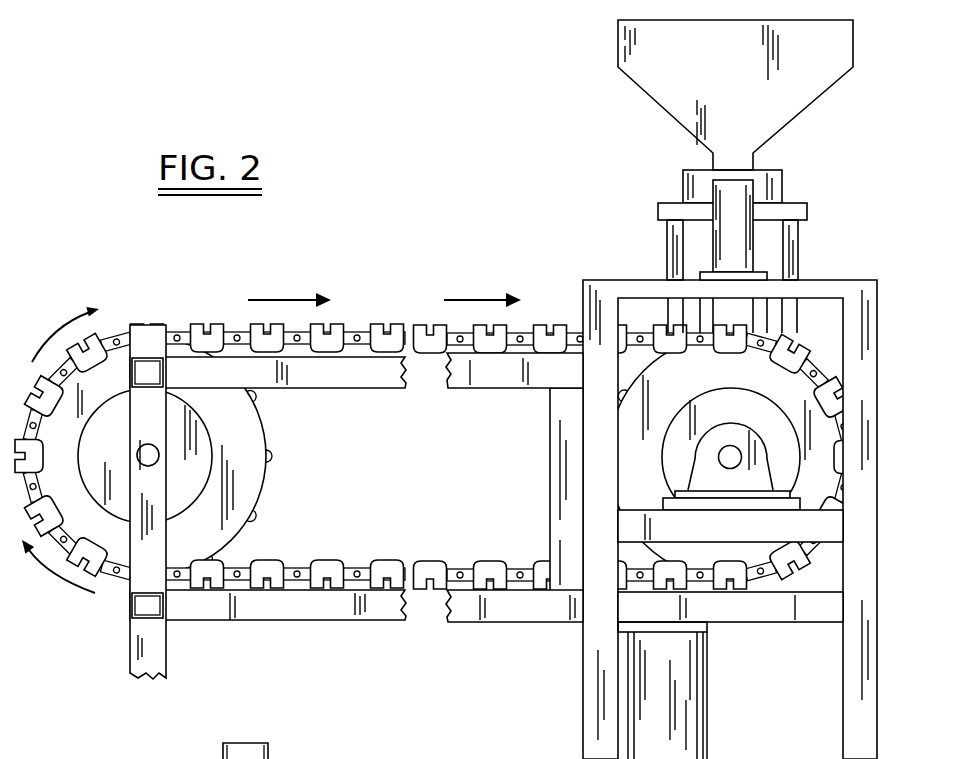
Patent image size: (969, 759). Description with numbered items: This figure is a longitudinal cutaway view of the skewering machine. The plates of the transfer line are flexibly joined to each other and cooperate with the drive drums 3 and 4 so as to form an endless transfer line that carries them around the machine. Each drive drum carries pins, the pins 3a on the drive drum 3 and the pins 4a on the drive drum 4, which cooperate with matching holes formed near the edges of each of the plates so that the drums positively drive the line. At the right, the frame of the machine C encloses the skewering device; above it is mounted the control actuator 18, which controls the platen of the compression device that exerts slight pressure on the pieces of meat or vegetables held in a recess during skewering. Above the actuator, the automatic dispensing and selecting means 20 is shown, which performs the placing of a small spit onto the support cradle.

The automatic dispensing and selecting means 20 is at (655, 93).
The control actuator 18 is at (738, 197).
The frame of the machine C is at (578, 287).
The drive drum 3 is at (632, 472).
The pins 3a is at (624, 395).
The drive drum 4 is at (227, 520).
The pins 4a is at (260, 502).